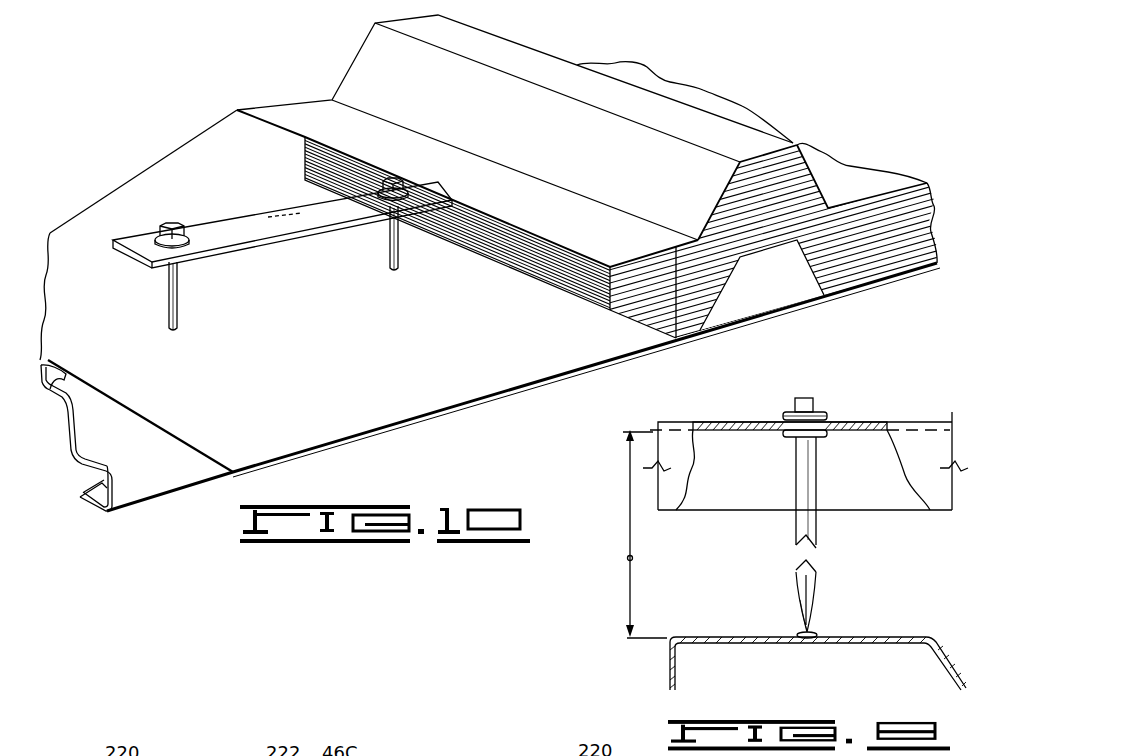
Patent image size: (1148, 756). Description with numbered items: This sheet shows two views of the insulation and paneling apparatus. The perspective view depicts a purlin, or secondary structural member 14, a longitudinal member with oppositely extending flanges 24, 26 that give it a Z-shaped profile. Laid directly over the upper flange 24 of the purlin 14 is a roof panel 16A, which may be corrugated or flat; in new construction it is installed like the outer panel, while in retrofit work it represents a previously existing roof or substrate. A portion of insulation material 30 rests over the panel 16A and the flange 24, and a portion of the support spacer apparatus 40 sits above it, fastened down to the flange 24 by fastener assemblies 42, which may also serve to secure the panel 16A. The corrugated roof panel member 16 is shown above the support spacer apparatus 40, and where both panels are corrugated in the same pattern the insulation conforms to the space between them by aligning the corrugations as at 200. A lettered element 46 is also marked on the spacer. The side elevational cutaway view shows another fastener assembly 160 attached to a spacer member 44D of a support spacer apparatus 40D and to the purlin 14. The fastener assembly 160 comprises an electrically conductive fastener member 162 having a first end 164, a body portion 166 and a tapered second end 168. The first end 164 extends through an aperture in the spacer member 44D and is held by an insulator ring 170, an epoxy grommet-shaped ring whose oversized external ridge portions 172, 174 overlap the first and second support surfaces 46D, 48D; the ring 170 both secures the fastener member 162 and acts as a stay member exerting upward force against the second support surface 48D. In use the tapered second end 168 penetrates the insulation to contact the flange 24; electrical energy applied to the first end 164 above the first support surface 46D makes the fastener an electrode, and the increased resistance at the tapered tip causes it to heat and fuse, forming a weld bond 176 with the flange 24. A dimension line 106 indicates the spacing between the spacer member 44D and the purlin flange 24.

In FIG. 10, the secondary structural member 14 is at (95, 421).
In FIG. 9, the secondary structural member 14 is at (658, 662).
In FIG. 10, the corrugated roof panel member 16 is at (362, 70).
In FIG. 10, the roof panel 16A is at (68, 247).
In FIG. 10, the flange 24 is at (55, 366).
In FIG. 9, the flange 24 is at (717, 636).
In FIG. 10, the flange 26 is at (102, 497).
In FIG. 10, the insulation material 30 is at (799, 142).
In FIG. 10, the support spacer apparatus 40 is at (244, 218).
In FIG. 10, the fastener assembly 42 is at (160, 293).
In FIG. 10, the fastener nut 46 is at (285, 206).
In FIG. 10, the aligned corrugation patterns 200 is at (703, 120).
In FIG. 9, the support spacer apparatus 40D is at (676, 421).
In FIG. 9, the spacer member 44D is at (760, 421).
In FIG. 9, the first support surface 46D is at (916, 420).
In FIG. 9, the second support surface 48D is at (888, 433).
In FIG. 9, the panel thickness dimension 106 is at (633, 558).
In FIG. 9, the fastener assembly 160 is at (806, 392).
In FIG. 9, the electrically conductive fastener member 162 is at (794, 533).
In FIG. 9, the first end 164 is at (794, 475).
In FIG. 9, the body portion 166 is at (818, 584).
In FIG. 9, the tapered second end 168 is at (800, 621).
In FIG. 9, the insulator ring 170 is at (824, 410).
In FIG. 9, the external ridge portion 172 is at (830, 421).
In FIG. 9, the external ridge portion 174 is at (822, 437).
In FIG. 9, the weld bond 176 is at (814, 633).